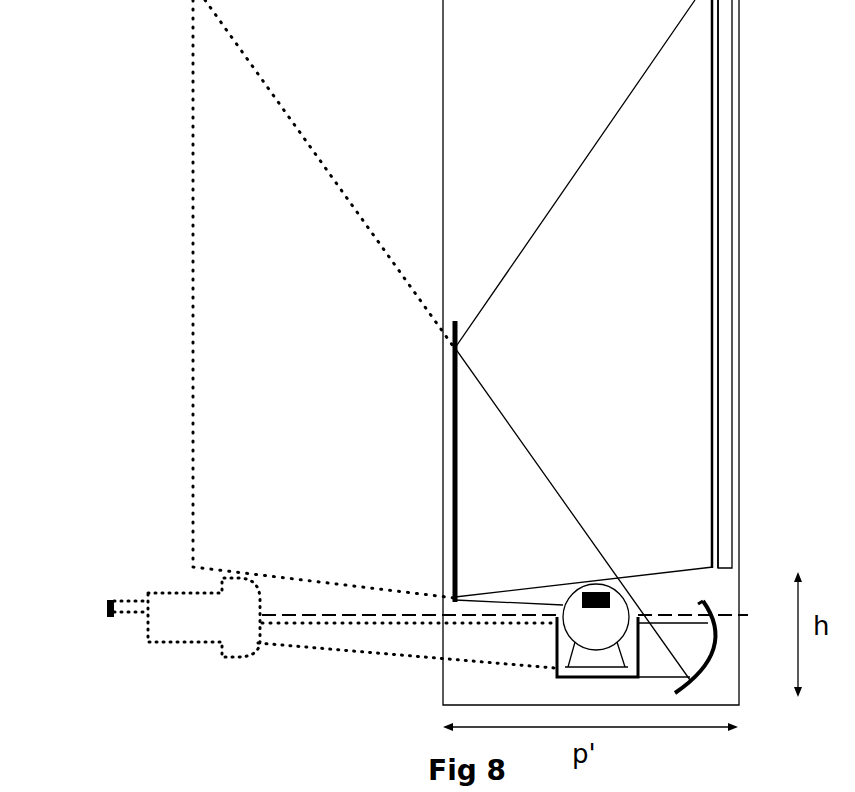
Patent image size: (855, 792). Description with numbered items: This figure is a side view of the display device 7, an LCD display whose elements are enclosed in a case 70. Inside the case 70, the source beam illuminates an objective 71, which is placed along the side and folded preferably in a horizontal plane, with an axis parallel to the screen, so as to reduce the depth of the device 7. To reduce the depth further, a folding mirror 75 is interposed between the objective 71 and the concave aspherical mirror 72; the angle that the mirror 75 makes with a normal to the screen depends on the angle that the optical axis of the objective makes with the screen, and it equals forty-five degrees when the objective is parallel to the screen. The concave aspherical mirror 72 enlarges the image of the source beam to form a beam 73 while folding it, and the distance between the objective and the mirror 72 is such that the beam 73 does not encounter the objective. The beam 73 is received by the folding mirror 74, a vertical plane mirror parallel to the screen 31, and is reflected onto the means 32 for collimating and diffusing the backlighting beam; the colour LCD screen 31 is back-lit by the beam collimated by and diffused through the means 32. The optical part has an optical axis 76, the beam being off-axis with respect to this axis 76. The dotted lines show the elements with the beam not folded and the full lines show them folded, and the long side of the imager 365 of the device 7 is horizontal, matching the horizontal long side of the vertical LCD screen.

The display device 7 is at (725, 123).
The colour LCD screen 31 is at (725, 390).
The means for collimating and diffusing 32 is at (715, 316).
The case 70 is at (440, 490).
The objective 71 is at (158, 632).
The concave aspherical mirror 72 is at (700, 690).
The beam 73 is at (567, 182).
The folding mirror 74 is at (455, 415).
The folding mirror 75 is at (557, 676).
The optical axis 76 is at (281, 614).
The imager 365 is at (582, 596).